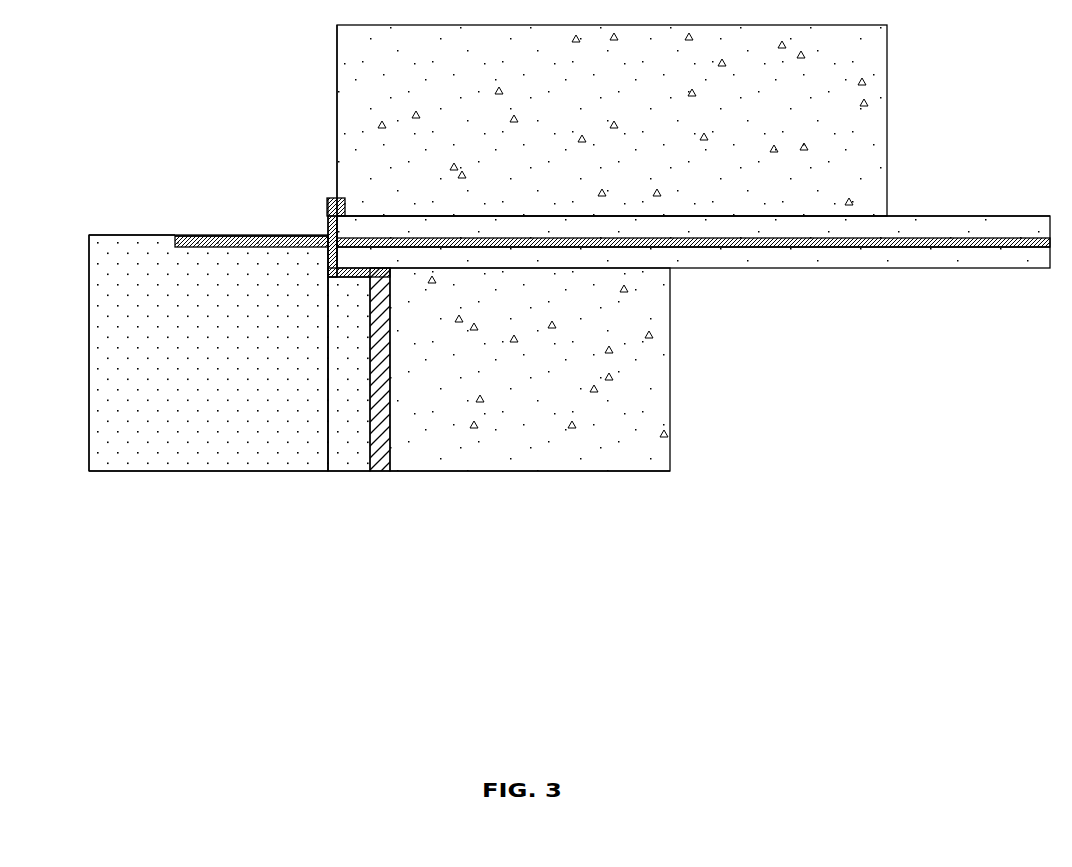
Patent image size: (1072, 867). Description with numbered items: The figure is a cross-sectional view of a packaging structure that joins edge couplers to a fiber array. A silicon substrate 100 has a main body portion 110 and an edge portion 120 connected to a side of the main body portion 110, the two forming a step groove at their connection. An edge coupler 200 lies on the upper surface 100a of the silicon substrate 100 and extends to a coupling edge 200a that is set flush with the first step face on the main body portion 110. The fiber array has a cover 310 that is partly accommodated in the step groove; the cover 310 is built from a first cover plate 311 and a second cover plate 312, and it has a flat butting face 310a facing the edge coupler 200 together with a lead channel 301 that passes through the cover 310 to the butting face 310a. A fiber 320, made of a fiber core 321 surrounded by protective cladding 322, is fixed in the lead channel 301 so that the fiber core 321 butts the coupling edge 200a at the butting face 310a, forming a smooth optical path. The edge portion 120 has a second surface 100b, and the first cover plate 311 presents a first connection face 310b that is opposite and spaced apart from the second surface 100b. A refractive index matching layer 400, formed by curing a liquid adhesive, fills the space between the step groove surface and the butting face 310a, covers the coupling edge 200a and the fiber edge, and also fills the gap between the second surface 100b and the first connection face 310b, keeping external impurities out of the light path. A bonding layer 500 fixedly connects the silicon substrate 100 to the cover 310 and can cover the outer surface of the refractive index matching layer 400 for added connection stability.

The silicon substrate 100 is at (340, 527).
The main body portion 110 is at (255, 463).
The edge portion 120 is at (345, 465).
The upper surface of substrate 100a is at (136, 235).
The second surface 100b is at (372, 440).
The edge coupler 200 is at (190, 236).
The coupling edge 200a is at (308, 236).
The lead channel 301 is at (377, 216).
The cover 310 is at (797, 327).
The butting face 310a is at (328, 199).
The first connection face 310b is at (391, 437).
The first cover plate 311 is at (656, 312).
The second cover plate 312 is at (784, 200).
The fiber 320 is at (927, 327).
The fiber core 321 is at (842, 256).
The cladding 322 is at (912, 252).
The refractive index matching layer 400 is at (327, 216).
The bonding layer 500 is at (382, 471).